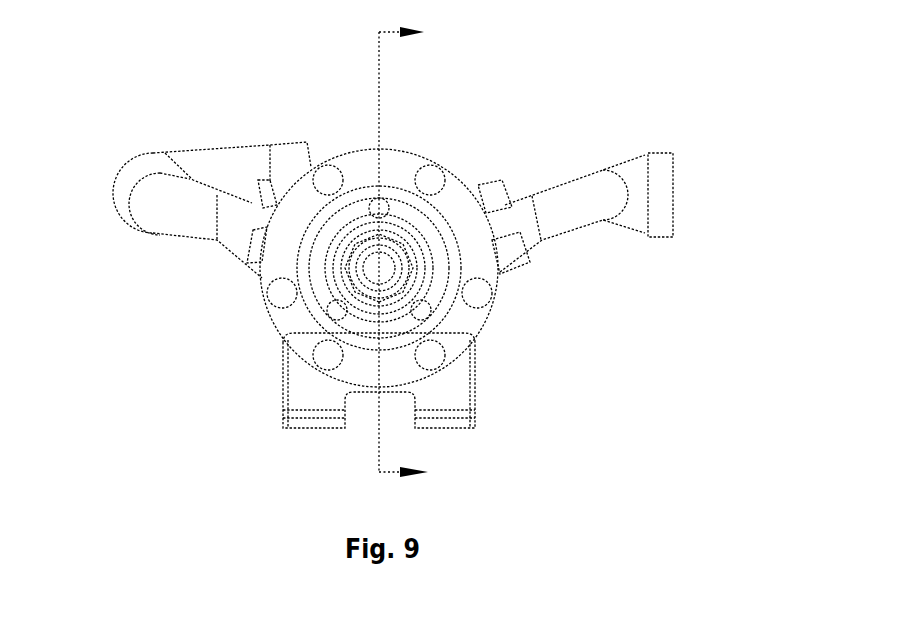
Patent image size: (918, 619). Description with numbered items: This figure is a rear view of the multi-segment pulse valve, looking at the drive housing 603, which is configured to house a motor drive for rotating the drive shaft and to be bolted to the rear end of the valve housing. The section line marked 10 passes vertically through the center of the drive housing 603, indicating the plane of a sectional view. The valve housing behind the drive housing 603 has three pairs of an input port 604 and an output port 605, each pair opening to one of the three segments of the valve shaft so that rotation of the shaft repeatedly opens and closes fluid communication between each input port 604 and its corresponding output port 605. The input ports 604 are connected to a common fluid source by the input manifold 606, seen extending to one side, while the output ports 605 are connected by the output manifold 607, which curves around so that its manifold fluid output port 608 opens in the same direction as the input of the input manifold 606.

The section line 10- 10 is at (423, 255).
The drive housing 603 is at (472, 323).
The input port 604 is at (497, 223).
The output port 605 is at (262, 230).
The input manifold 606 is at (662, 150).
The output manifold 607 is at (247, 143).
The manifold fluid output port 608 is at (373, 271).